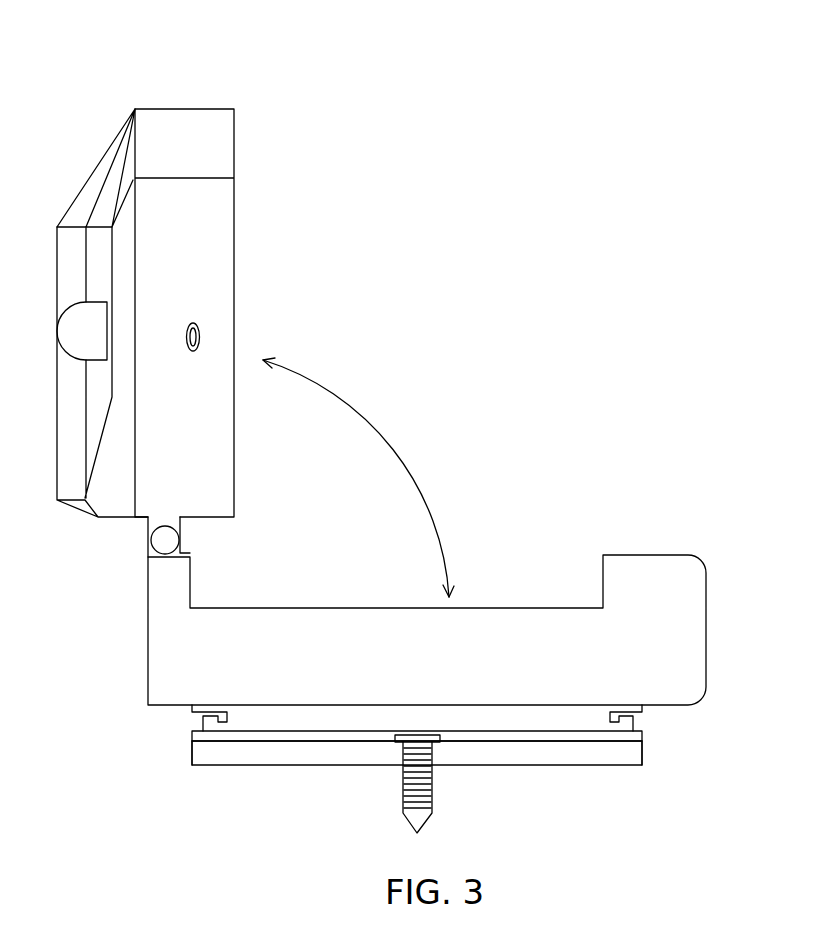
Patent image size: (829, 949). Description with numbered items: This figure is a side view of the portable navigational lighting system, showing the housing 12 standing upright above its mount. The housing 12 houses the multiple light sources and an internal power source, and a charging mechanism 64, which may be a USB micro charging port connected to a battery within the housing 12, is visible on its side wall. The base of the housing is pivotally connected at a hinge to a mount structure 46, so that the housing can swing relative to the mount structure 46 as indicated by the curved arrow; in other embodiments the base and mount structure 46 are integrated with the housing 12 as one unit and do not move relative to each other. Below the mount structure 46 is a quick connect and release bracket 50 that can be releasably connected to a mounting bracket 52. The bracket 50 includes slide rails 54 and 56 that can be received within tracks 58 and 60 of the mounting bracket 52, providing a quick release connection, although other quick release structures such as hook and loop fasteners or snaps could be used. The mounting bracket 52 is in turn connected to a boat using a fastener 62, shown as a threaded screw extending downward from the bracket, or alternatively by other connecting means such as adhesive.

The housing 12 is at (204, 98).
The mount structure 46 is at (706, 636).
The quick connect and release bracket 50 is at (542, 719).
The mounting bracket 52 is at (565, 758).
The slide rail 54 is at (191, 732).
The slide rail 56 is at (644, 740).
The track 58 is at (192, 716).
The track 60 is at (642, 716).
The fastener 62 is at (432, 805).
The charging mechanism 64 is at (192, 356).